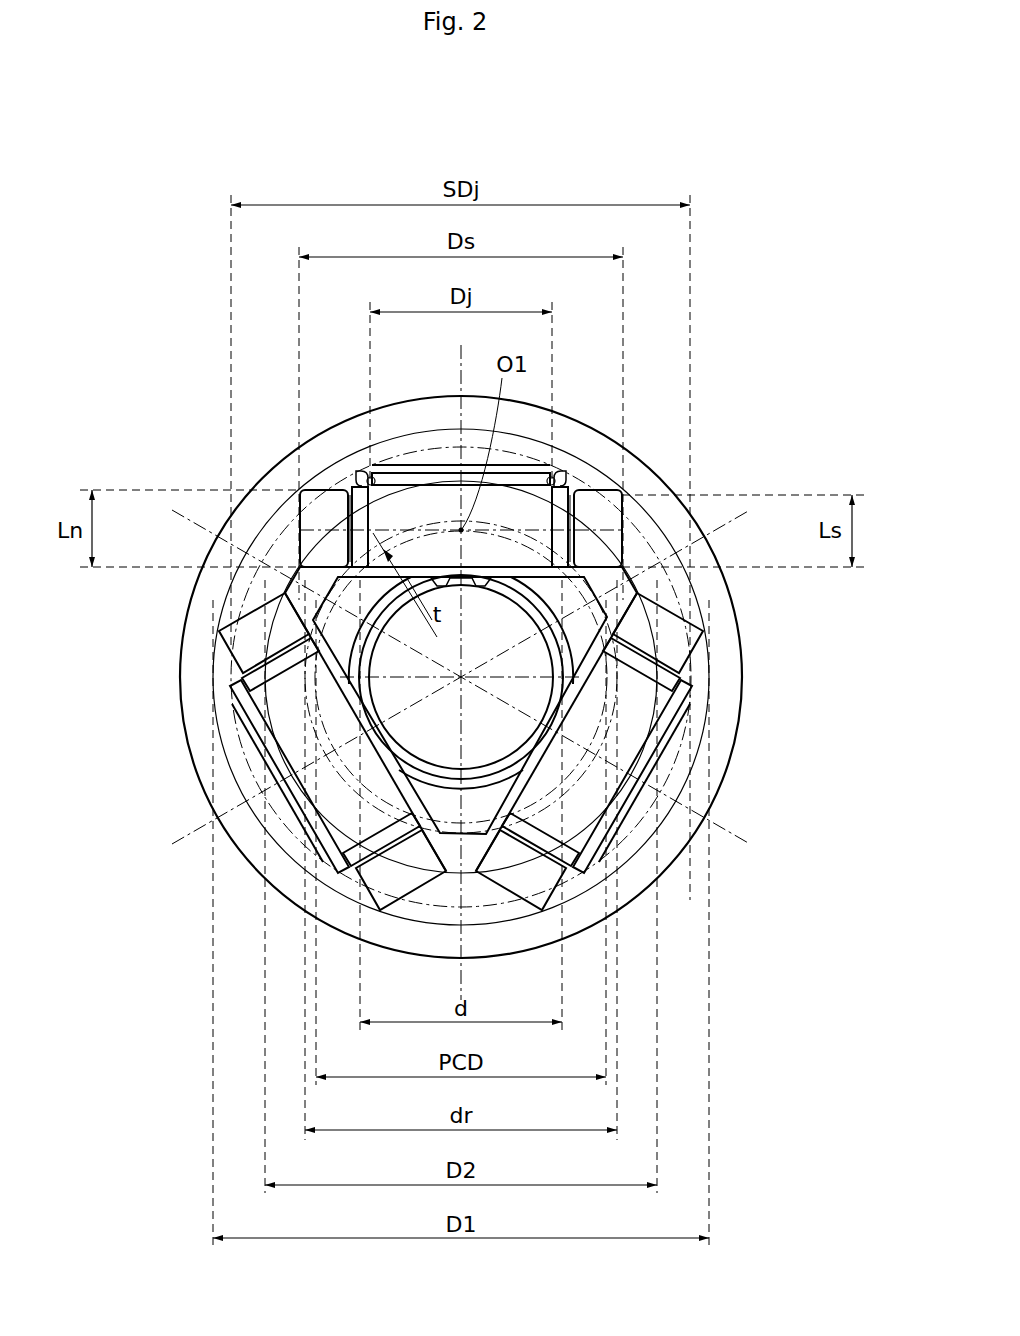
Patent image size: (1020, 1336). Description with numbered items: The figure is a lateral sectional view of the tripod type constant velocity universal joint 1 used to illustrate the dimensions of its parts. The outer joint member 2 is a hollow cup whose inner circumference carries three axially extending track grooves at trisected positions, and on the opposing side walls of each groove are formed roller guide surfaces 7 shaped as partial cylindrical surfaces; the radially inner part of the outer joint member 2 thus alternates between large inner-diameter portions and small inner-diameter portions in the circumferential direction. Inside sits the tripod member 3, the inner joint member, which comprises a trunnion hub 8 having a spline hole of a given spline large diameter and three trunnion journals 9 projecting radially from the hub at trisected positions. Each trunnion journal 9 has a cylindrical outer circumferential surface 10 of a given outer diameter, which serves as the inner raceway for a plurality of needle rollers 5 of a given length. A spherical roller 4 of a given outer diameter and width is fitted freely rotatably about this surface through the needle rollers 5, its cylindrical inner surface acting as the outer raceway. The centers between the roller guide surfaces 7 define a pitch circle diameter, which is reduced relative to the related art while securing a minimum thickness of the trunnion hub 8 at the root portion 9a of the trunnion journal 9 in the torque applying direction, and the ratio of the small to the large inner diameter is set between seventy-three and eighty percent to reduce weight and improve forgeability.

The tripod type constant velocity universal joint 1 is at (738, 460).
The outer joint member 2 is at (650, 457).
The tripod member 3 is at (306, 600).
The spherical roller 4 is at (660, 648).
The needle roller 5 is at (567, 523).
The roller guide surface 7 is at (300, 535).
The trunnion hub 8 is at (432, 774).
The trunnion journal 9 is at (431, 463).
The root portion of the trunnion journal 9a is at (634, 573).
The cylindrical outer circumferential surface 10 is at (347, 516).